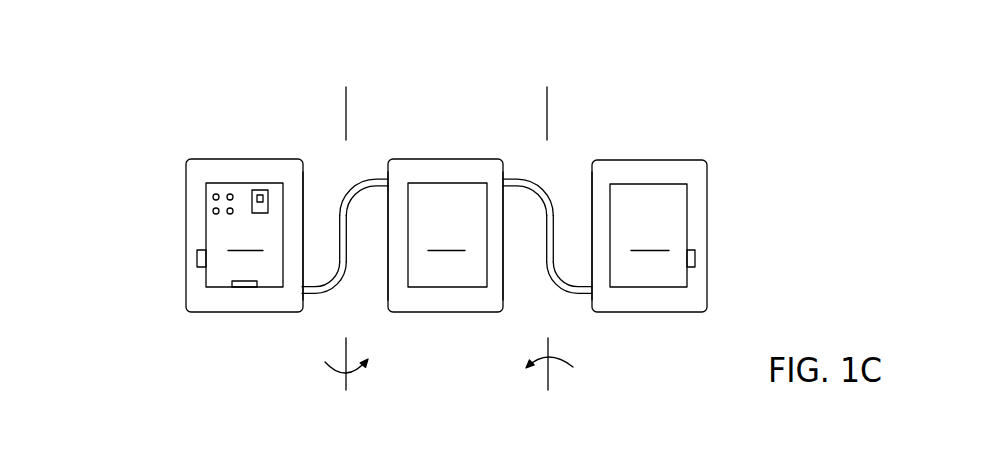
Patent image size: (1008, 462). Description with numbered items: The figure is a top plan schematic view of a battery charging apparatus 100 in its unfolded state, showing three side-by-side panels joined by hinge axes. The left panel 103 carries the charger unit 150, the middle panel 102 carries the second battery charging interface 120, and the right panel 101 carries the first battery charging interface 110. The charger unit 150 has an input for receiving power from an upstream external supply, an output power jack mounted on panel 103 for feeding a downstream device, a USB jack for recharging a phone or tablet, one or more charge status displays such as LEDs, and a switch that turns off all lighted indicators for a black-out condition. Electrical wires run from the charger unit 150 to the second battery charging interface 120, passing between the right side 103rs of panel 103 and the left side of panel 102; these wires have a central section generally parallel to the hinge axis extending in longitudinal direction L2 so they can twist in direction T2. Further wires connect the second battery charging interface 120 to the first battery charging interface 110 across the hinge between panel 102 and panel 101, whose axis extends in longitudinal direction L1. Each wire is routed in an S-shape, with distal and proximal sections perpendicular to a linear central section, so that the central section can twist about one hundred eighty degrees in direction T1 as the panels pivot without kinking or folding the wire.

The battery charging apparatus 100 is at (122, 222).
The panel 101 is at (698, 300).
The panel 102 is at (437, 174).
The panel 103 is at (191, 298).
The right side of panel 103 103rs is at (303, 188).
The first battery charging interface 110 is at (648, 235).
The second battery charging interface 120 is at (447, 235).
The charger unit 150 is at (199, 209).
The twist direction T1 is at (552, 352).
The twist direction T2 is at (351, 372).
The longitudinal direction L1 is at (549, 378).
The longitudinal direction L2 is at (350, 383).